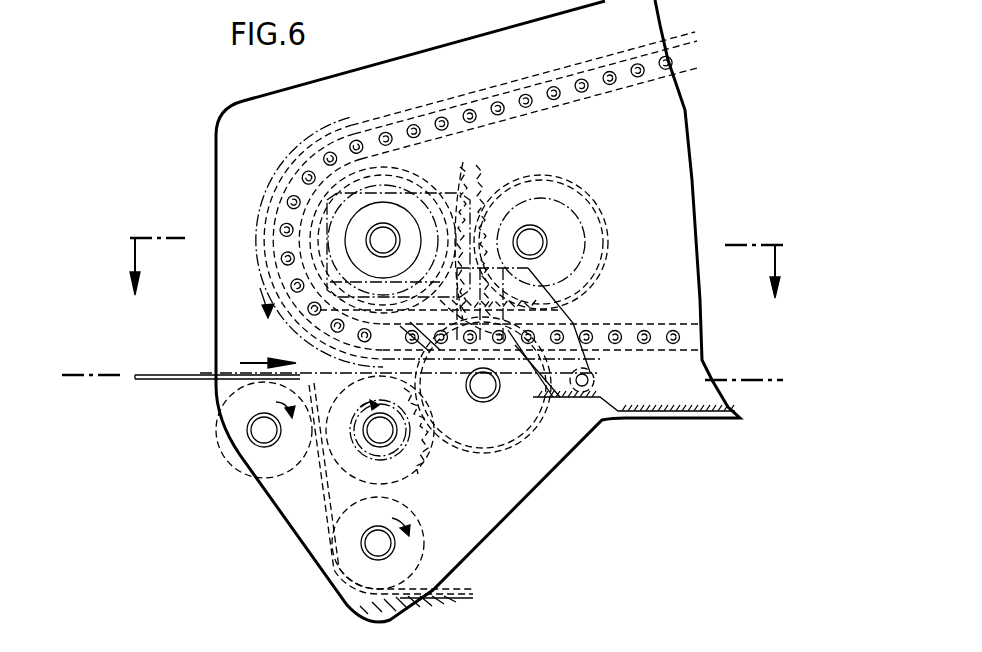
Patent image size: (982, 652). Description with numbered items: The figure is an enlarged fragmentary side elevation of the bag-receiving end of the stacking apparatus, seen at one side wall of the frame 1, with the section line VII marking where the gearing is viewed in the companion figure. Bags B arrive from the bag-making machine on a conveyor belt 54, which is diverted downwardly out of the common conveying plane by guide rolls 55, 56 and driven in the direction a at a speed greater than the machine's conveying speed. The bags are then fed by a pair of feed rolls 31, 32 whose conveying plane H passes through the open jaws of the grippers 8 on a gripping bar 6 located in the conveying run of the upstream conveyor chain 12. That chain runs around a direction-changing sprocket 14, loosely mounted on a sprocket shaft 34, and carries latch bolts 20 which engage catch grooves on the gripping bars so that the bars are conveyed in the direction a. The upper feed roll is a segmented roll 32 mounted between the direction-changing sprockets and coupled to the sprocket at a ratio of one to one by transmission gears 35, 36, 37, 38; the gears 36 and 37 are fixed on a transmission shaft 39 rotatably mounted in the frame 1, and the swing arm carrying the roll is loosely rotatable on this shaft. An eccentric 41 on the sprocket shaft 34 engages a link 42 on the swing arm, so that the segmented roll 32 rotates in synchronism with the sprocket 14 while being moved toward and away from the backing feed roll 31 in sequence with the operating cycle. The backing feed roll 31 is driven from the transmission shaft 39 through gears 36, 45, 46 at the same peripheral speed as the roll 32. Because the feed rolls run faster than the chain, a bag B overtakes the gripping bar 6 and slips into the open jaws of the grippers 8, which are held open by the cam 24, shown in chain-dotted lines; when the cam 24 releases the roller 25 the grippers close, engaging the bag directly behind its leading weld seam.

The frame 1 is at (553, 458).
The gripping bar 6 is at (463, 362).
The grippers 8 is at (518, 382).
The upstream conveyor chain 12 is at (613, 327).
The direction-changing sprocket 14 is at (428, 150).
The latch bolt 20 is at (545, 393).
The cam 24 is at (676, 408).
The roller 25 is at (595, 385).
The feed roll 31 is at (412, 462).
The segmented feed roll 32 is at (265, 208).
The sprocket shaft 34 is at (388, 232).
The transmission gear 35 is at (458, 195).
The transmission gear 36 is at (590, 222).
The transmission gear 37 is at (541, 242).
The transmission gear 38 is at (494, 304).
The transmission shaft 39 is at (533, 238).
The eccentric 41 is at (332, 238).
The link 42 is at (372, 187).
The gear 45 is at (480, 445).
The gear 46 is at (322, 478).
The conveyor belt 54 is at (168, 380).
The guide roll 55 is at (227, 450).
The guide roll 56 is at (413, 560).
The bag B is at (205, 372).
The conveying direction a is at (250, 362).
The conveying plane of the feed rolls H is at (421, 379).
The section line VII- VII is at (125, 290).